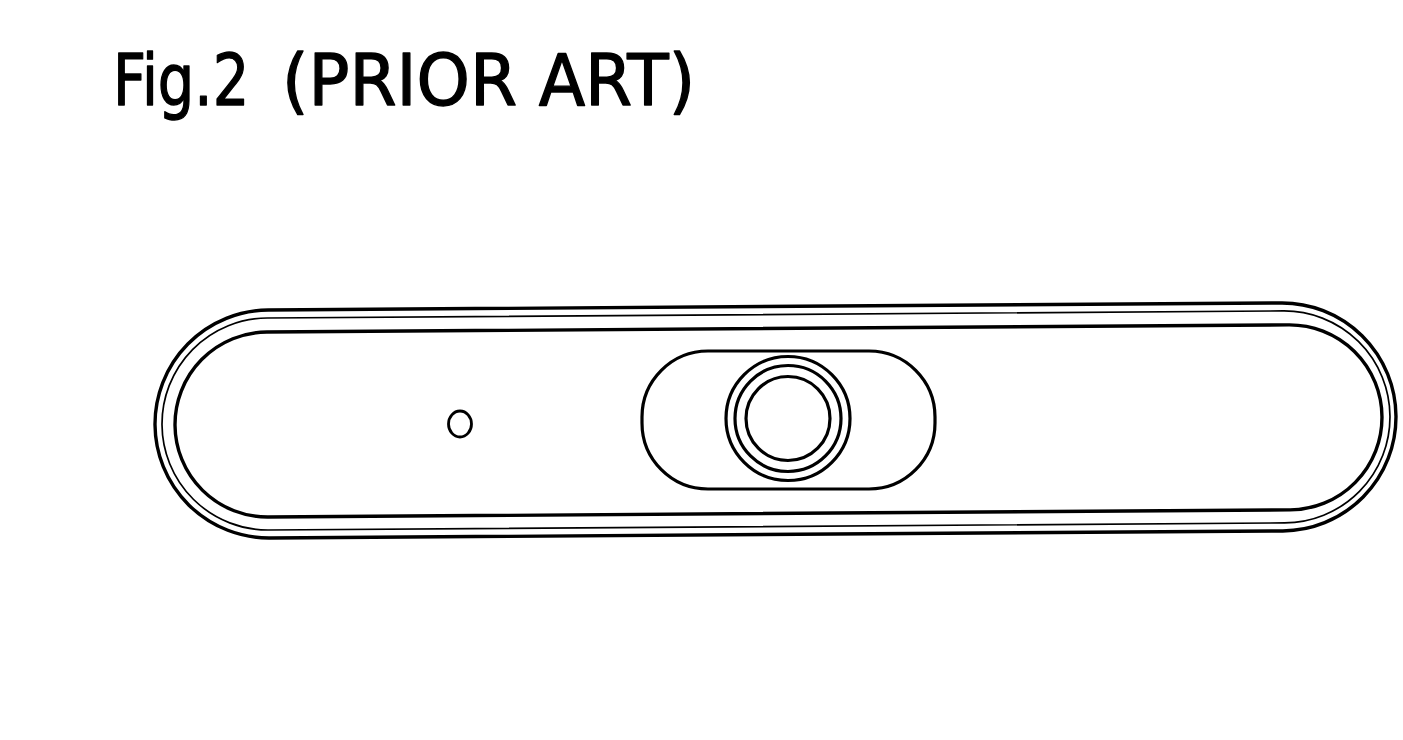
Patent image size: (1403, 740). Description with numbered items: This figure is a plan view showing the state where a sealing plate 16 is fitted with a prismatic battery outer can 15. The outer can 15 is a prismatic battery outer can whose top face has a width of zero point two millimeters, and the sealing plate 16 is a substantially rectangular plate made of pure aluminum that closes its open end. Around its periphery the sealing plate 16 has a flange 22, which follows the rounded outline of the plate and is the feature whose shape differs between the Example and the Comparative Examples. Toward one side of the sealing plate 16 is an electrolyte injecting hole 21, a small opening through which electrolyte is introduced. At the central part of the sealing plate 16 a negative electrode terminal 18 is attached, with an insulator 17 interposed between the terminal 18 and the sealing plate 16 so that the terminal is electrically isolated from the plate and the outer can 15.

The prismatic battery outer can 15 is at (300, 312).
The sealing plate 16 is at (1162, 353).
The insulator 17 is at (733, 365).
The negative electrode terminal 18 is at (795, 452).
The electrolyte injecting hole 21 is at (464, 422).
The flange 22 is at (478, 522).